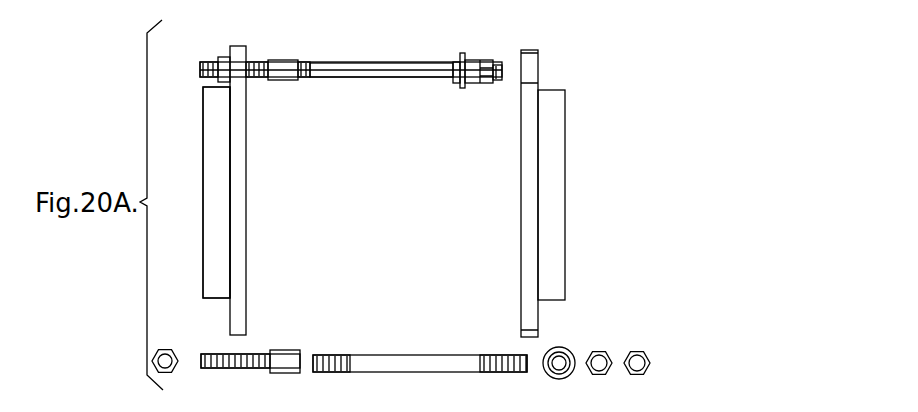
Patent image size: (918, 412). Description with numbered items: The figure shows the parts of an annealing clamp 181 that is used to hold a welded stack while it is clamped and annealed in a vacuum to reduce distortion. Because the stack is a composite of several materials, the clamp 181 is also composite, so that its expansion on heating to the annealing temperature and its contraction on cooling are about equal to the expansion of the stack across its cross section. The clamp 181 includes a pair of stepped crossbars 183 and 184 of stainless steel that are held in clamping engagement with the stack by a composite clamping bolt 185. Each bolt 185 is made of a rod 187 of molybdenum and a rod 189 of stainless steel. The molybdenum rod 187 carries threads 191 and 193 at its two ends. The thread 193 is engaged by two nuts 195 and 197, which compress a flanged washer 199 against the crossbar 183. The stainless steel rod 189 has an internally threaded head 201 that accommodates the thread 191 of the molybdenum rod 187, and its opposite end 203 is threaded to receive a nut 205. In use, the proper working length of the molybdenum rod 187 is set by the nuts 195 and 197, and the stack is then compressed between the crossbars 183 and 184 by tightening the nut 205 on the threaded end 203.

The clamp 181 is at (390, 210).
The stepped crossbar 183 is at (563, 190).
The stepped crossbar 184 is at (203, 153).
The composite clamping bolt 185 is at (348, 61).
The molybdenum rod 187 is at (390, 77).
The stainless steel rod 189 is at (250, 354).
The thread 191 is at (304, 77).
The thread 193 is at (498, 80).
The nut 195 is at (483, 60).
The nut 197 is at (462, 85).
The flanged washer 199 is at (462, 53).
The internally threaded head 201 is at (290, 60).
The threaded end 203 is at (252, 62).
The nut 205 is at (222, 57).